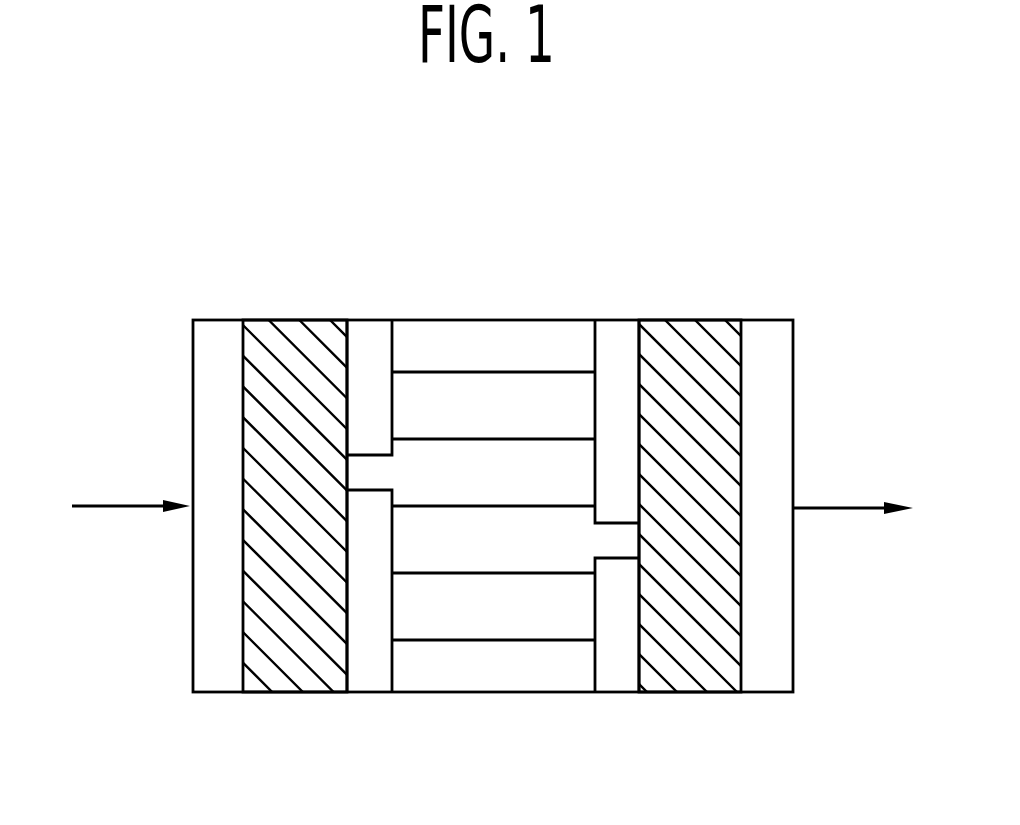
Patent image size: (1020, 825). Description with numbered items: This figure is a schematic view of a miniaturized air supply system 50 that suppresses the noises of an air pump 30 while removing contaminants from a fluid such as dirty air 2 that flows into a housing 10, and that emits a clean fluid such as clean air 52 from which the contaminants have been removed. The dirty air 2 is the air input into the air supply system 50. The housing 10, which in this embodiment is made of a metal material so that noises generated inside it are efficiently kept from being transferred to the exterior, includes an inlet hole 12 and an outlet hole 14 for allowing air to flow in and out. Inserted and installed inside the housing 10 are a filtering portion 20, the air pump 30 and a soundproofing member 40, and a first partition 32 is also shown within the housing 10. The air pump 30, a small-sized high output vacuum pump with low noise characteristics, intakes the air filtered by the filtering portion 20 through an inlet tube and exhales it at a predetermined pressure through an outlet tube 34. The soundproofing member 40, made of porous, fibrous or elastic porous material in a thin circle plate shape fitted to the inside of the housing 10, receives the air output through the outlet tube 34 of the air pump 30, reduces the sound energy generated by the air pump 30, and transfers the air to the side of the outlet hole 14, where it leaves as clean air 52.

The air supply system 50 is at (232, 212).
The housing 10 is at (793, 322).
The inlet hole 12 is at (190, 505).
The outlet hole 14 is at (796, 504).
The dirty air 2 is at (100, 506).
The clean air 52 is at (868, 506).
The filtering portion 20 is at (293, 328).
The air pump 30 is at (476, 337).
The first partition 32 is at (365, 456).
The outlet tube 34 is at (611, 560).
The soundproofing member 40 is at (688, 337).